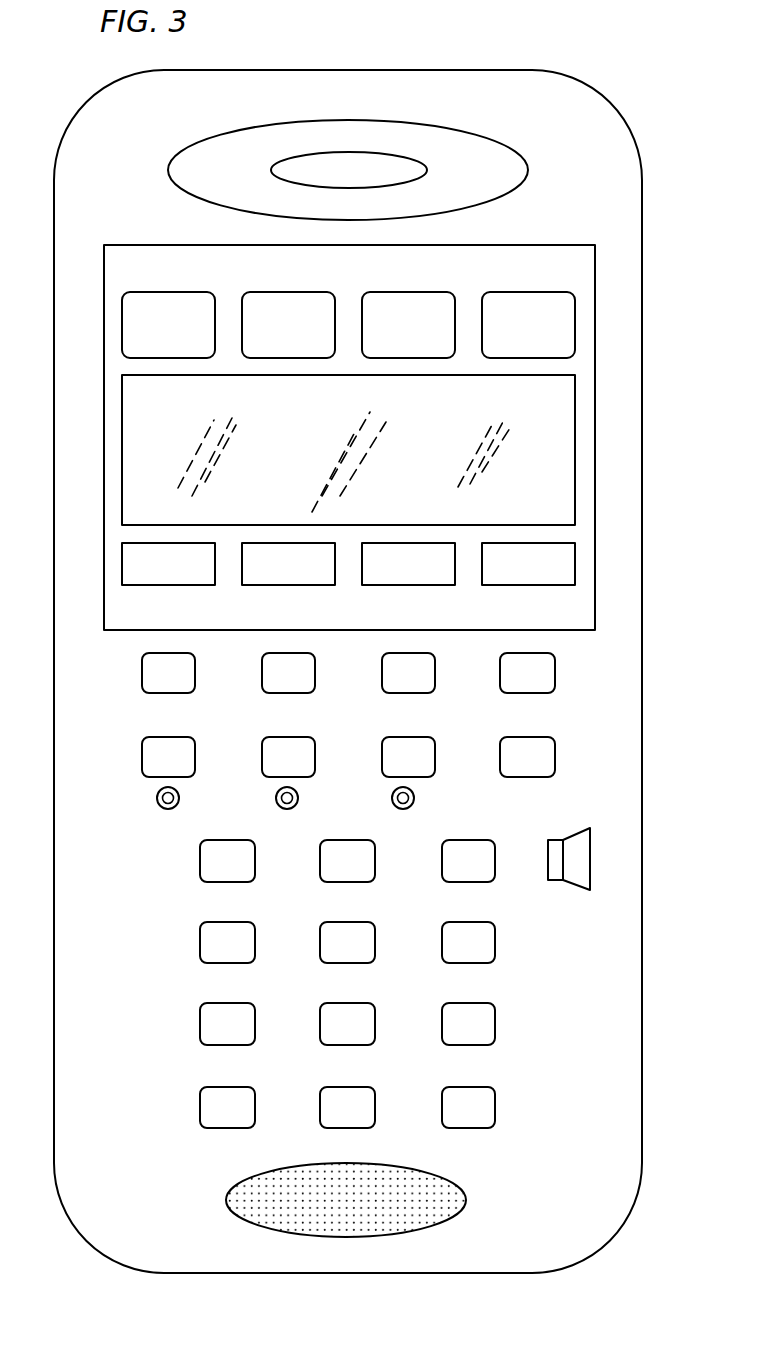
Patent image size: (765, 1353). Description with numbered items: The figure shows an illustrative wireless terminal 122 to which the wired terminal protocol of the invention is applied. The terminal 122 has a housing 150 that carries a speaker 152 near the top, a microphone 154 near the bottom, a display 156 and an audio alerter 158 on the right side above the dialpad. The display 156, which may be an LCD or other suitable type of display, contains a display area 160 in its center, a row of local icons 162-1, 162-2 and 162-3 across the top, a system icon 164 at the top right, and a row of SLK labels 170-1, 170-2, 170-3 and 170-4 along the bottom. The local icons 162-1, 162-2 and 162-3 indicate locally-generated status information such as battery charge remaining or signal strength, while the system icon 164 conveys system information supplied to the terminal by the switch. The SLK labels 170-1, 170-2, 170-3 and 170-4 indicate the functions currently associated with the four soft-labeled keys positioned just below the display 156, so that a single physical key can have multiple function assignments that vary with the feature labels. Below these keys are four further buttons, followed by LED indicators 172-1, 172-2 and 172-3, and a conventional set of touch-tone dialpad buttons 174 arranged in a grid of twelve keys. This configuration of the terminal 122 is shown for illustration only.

The wireless terminal 122 is at (604, 60).
The housing 150 is at (93, 109).
The speaker 152 is at (527, 171).
The microphone 154 is at (226, 1200).
The display 156 is at (113, 243).
The audio alerter 158 is at (554, 838).
The display area 160 is at (575, 391).
The local icon 162-1 is at (167, 293).
The local icon 162-2 is at (287, 293).
The local icon 162-3 is at (407, 293).
The system icon 164 is at (527, 293).
The SLK label 170-1 is at (166, 586).
The SLK label 170-2 is at (286, 586).
The SLK label 170-3 is at (406, 586).
The SLK label 170-4 is at (526, 586).
The LED indicator 172-1 is at (157, 798).
The LED indicator 172-2 is at (276, 798).
The LED indicator 172-3 is at (414, 799).
The touch-tone dialpad buttons 174 is at (187, 840).